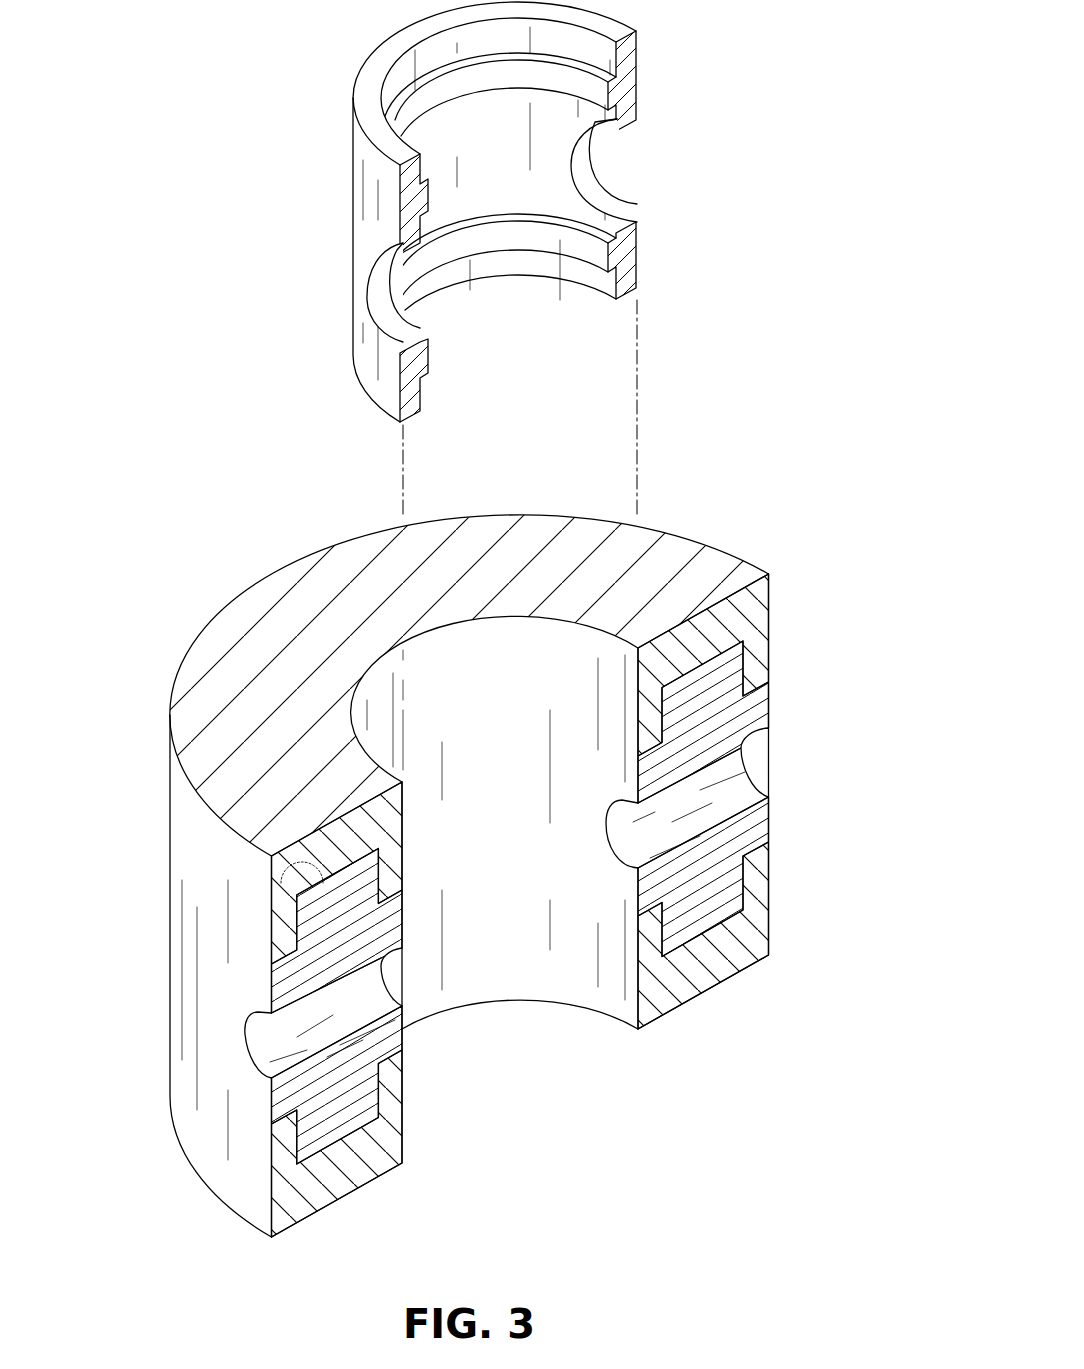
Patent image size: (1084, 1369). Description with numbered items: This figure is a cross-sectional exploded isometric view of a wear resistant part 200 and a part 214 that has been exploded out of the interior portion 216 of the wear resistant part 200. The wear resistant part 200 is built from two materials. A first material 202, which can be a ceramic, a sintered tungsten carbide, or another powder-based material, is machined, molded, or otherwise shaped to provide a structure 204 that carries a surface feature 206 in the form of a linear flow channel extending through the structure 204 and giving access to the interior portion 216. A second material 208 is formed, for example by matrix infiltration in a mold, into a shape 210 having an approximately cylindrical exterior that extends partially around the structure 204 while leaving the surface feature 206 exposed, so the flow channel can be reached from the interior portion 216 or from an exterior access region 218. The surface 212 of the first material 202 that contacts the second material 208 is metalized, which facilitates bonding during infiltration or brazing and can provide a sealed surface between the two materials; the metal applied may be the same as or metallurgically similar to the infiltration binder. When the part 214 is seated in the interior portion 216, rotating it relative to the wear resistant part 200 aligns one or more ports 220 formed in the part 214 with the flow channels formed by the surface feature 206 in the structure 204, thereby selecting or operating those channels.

The wear resistant part 200 is at (207, 604).
The first material 202 is at (740, 727).
The structure 204 is at (277, 933).
The surface feature 206 is at (753, 780).
The second material 208 is at (744, 598).
The shape 210 is at (769, 624).
The surface 212 is at (273, 883).
The part 214 is at (388, 36).
The interior portion 216 is at (495, 980).
The exterior access region 218 is at (783, 751).
The ports 220 is at (597, 173).